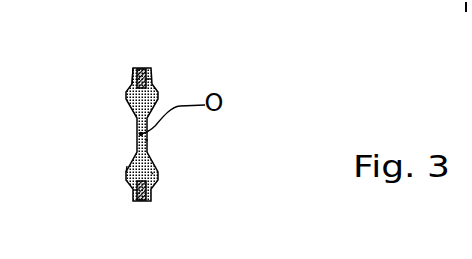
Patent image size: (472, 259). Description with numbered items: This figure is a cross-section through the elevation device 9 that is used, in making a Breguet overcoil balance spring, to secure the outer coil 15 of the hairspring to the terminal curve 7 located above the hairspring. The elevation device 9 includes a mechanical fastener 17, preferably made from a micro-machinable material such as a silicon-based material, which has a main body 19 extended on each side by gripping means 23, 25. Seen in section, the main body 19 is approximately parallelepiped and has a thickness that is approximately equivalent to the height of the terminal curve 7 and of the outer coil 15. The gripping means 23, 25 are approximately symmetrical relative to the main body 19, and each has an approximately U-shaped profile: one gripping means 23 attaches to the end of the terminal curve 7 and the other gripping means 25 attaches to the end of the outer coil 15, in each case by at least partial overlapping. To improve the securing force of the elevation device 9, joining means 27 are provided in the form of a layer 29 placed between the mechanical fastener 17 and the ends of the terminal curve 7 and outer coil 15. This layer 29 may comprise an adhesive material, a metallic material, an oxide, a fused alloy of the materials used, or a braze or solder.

The elevation device 9 is at (97, 111).
The terminal curve 7 is at (141, 70).
The outer coil 15 is at (140, 200).
The mechanical fastener 17 is at (127, 168).
The main body 19 is at (146, 140).
The gripping means 23 is at (134, 79).
The gripping means 25 is at (151, 174).
The joining means 27 is at (216, 80).
The layer 29 is at (150, 79).